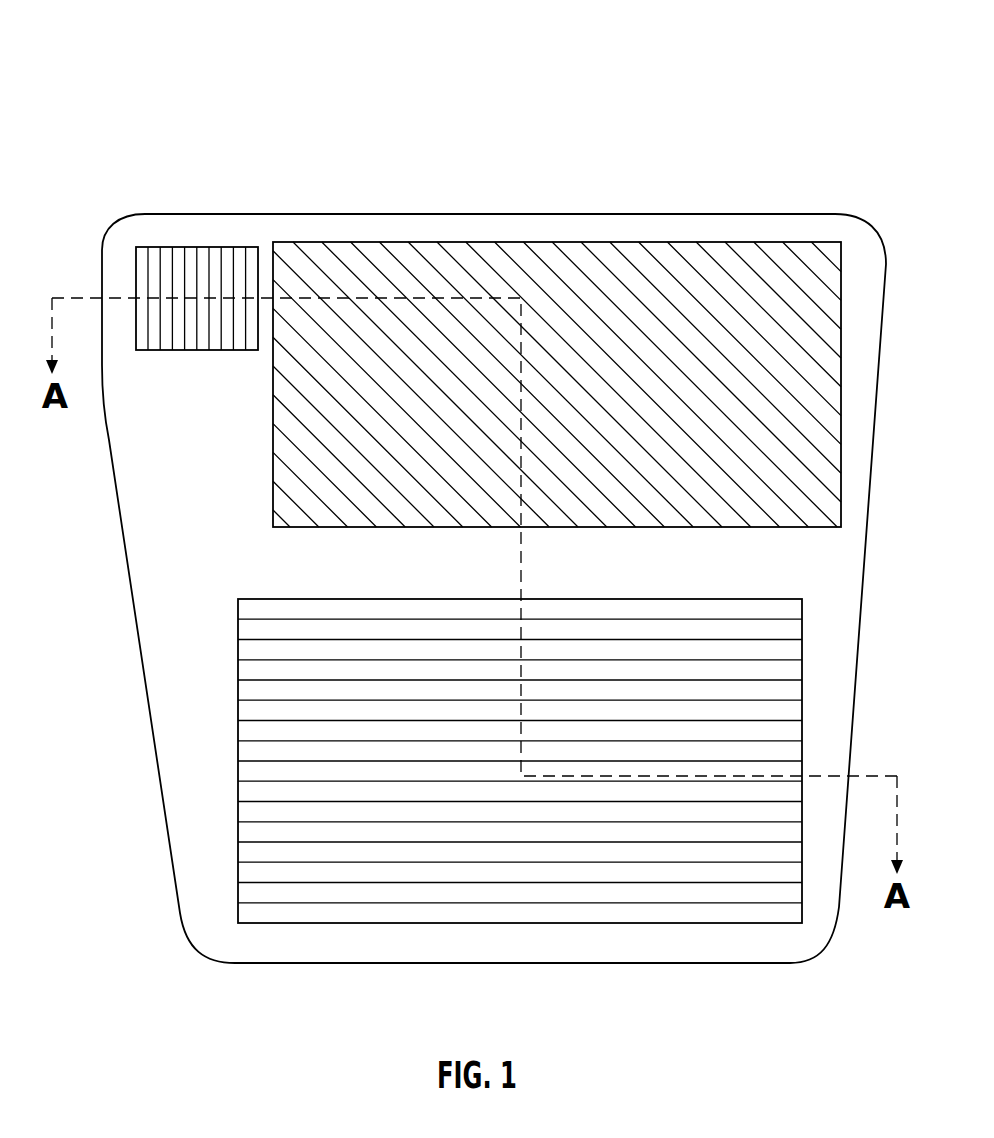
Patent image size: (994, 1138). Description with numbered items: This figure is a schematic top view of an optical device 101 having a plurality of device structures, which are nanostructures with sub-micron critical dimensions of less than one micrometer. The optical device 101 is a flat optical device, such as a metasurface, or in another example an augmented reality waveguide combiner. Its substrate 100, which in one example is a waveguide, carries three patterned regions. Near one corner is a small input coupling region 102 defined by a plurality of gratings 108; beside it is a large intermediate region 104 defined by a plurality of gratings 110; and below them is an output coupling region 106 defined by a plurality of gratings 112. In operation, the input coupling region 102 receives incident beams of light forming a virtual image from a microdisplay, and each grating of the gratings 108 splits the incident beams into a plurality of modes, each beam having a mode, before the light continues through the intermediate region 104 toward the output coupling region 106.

The substrate 100 is at (227, 470).
The optical device 101 is at (788, 70).
The input coupling region 102 is at (173, 244).
The intermediate region 104 is at (588, 241).
The output coupling region 106 is at (806, 764).
The gratings 108 is at (147, 318).
The gratings 110 is at (747, 265).
The gratings 112 is at (730, 905).